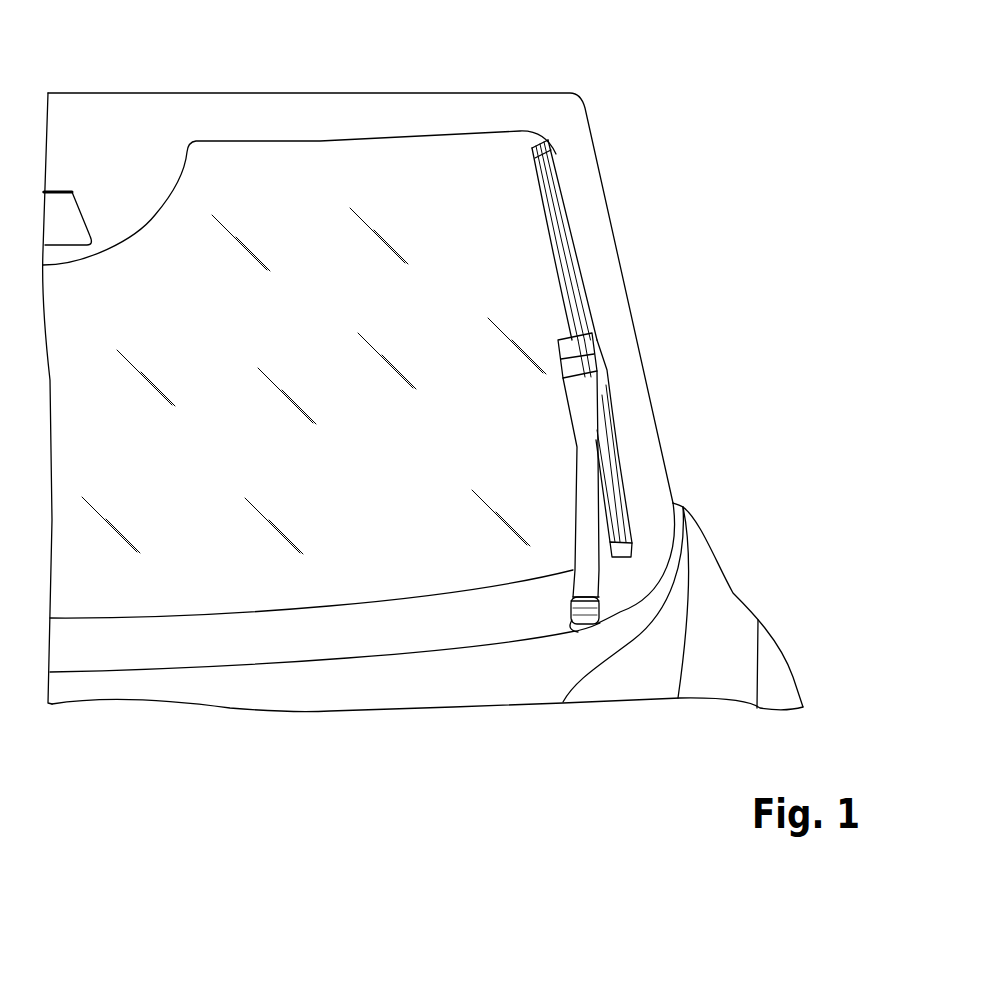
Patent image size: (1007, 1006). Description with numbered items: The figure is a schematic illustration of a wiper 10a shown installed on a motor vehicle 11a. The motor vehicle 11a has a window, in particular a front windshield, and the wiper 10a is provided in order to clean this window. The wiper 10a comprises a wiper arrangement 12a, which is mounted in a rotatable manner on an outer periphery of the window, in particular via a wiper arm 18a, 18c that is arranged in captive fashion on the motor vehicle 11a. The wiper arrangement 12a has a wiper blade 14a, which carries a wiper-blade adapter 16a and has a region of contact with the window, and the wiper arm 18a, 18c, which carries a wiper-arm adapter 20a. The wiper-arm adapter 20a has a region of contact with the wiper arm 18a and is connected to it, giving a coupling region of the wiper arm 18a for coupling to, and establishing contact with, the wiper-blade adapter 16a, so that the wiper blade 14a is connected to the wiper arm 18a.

The wiper 10a is at (683, 252).
The motor vehicle 11a is at (752, 100).
The wiper arrangement 12a is at (680, 312).
The wiper blade 14a is at (575, 213).
The wiper-blade adapter 16a is at (585, 333).
The wiper arm 18a is at (595, 461).
The wiper arm 18c is at (718, 484).
The wiper-arm adapter 20a is at (588, 365).